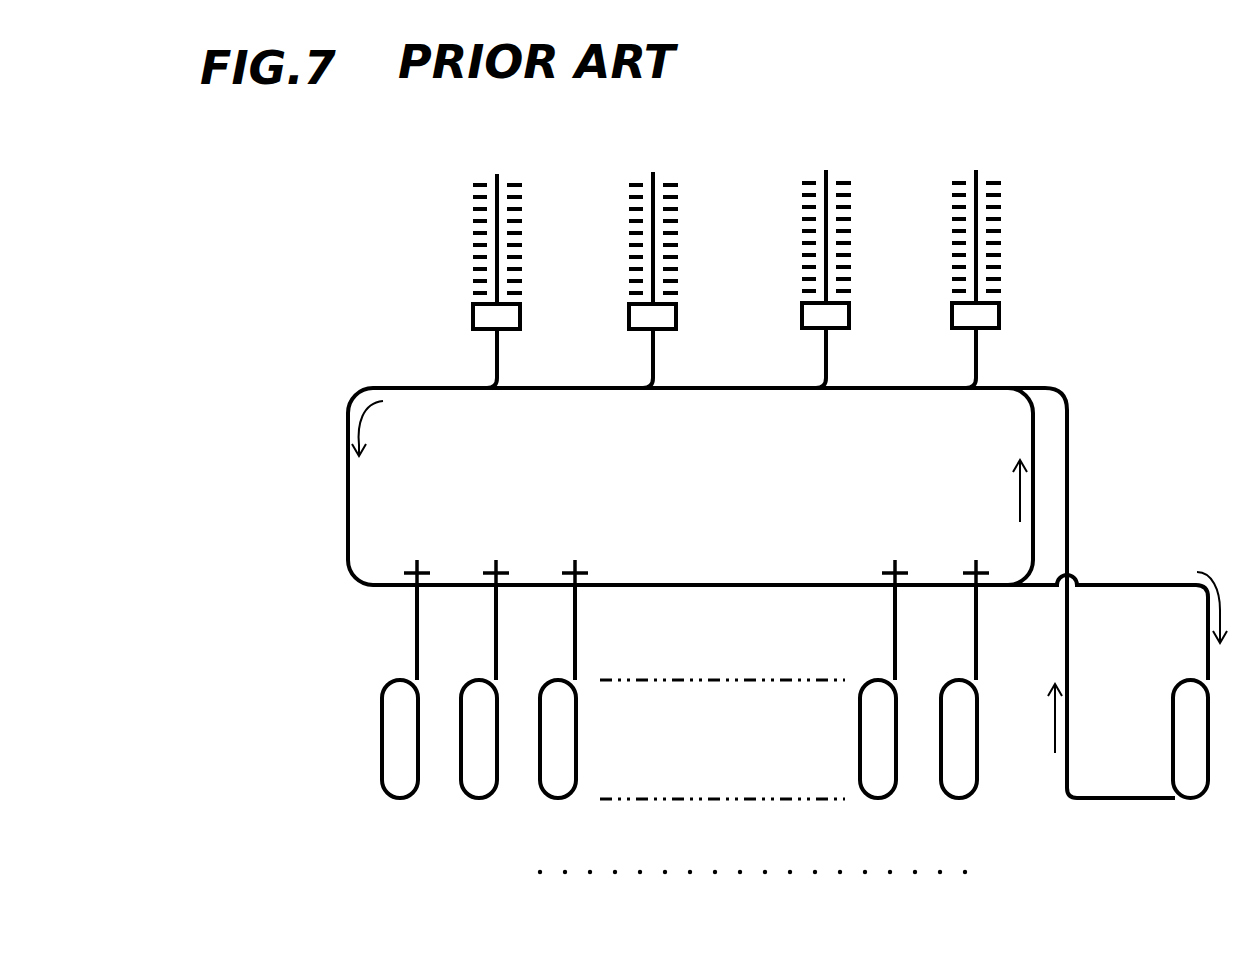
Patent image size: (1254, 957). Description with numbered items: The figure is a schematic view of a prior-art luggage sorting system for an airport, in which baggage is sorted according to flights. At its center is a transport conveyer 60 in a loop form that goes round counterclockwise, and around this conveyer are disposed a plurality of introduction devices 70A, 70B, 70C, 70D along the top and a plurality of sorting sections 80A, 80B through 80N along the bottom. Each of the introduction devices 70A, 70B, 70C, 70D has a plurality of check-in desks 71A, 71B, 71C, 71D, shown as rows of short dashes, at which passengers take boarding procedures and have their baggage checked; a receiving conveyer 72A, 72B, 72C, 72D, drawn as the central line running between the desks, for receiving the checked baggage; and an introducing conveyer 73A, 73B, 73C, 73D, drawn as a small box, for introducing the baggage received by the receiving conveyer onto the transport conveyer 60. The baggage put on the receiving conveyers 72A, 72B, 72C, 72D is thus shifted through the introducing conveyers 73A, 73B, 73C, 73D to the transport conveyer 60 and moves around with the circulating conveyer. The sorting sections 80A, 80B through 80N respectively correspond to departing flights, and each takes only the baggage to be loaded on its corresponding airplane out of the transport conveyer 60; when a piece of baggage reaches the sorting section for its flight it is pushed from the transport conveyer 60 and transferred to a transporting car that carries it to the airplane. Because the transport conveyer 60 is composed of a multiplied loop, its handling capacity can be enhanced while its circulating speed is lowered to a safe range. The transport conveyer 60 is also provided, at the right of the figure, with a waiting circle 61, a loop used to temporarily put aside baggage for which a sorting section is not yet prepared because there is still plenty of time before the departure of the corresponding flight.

The transport conveyer 60 is at (357, 512).
The waiting circle 61 is at (1193, 790).
The introduction device 70A is at (481, 258).
The introduction device 70B is at (633, 247).
The introduction device 70C is at (824, 247).
The introduction device 70D is at (973, 244).
The check-in desks 71A is at (481, 283).
The check-in desks 71B is at (637, 257).
The check-in desks 71C is at (810, 292).
The check-in desks 71D is at (960, 288).
The receiving conveyer 72A is at (495, 222).
The receiving conveyer 72B is at (656, 217).
The receiving conveyer 72C is at (828, 240).
The receiving conveyer 72D is at (978, 215).
The introducing conveyer 73A is at (496, 355).
The introducing conveyer 73B is at (652, 356).
The introducing conveyer 73C is at (826, 352).
The introducing conveyer 73D is at (978, 355).
The sorting section 80A is at (380, 809).
The sorting section 80B is at (470, 808).
The sorting section 80N is at (973, 807).